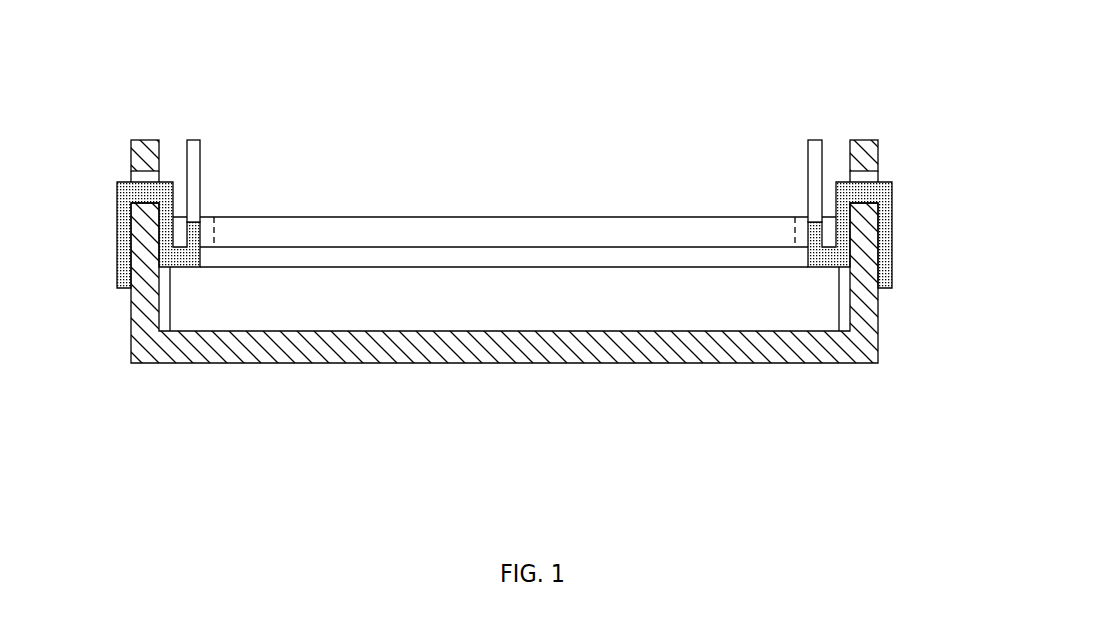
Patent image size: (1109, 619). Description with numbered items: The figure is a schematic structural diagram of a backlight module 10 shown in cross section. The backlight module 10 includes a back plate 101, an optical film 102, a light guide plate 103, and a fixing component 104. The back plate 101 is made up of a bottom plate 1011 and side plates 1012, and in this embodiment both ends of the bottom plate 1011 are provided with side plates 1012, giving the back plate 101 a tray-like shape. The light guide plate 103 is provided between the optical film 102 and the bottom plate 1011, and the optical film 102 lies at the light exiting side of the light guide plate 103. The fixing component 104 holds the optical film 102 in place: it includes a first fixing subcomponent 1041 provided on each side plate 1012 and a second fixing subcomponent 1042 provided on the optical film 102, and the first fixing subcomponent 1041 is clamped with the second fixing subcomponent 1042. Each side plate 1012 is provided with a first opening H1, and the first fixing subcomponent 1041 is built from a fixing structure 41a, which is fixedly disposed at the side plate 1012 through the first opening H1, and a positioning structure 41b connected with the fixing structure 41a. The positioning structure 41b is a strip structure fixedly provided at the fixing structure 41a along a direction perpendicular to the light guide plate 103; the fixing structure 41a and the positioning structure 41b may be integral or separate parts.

The backlight module 10 is at (143, 35).
The back plate 101 is at (540, 363).
The bottom plate 1011 is at (794, 363).
The side plate 1012 is at (878, 333).
The optical film 102 is at (381, 217).
The light guide plate 103 is at (490, 301).
The fixing component 104 is at (504, 161).
The first fixing subcomponent 1041 is at (504, 161).
The fixing structure 41a is at (166, 182).
The positioning structure 41b is at (195, 140).
The second fixing subcomponent 1042 is at (208, 216).
The first opening H1 is at (130, 173).